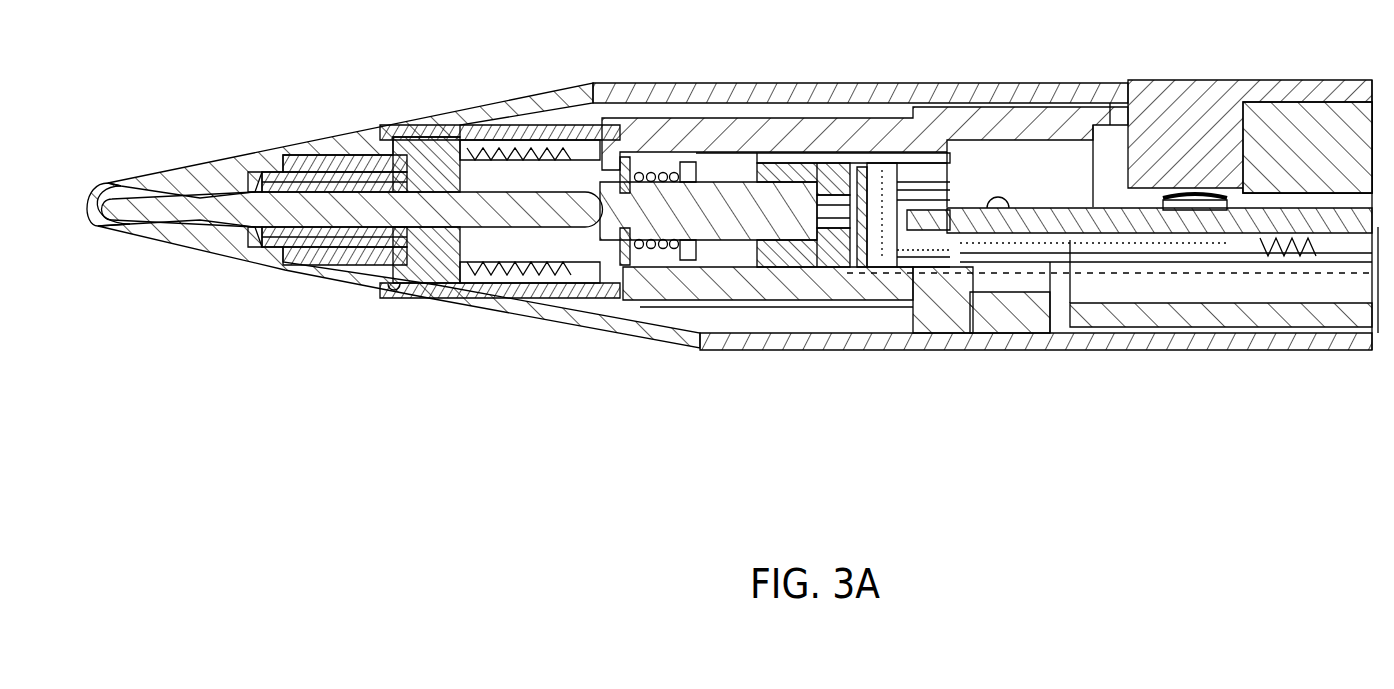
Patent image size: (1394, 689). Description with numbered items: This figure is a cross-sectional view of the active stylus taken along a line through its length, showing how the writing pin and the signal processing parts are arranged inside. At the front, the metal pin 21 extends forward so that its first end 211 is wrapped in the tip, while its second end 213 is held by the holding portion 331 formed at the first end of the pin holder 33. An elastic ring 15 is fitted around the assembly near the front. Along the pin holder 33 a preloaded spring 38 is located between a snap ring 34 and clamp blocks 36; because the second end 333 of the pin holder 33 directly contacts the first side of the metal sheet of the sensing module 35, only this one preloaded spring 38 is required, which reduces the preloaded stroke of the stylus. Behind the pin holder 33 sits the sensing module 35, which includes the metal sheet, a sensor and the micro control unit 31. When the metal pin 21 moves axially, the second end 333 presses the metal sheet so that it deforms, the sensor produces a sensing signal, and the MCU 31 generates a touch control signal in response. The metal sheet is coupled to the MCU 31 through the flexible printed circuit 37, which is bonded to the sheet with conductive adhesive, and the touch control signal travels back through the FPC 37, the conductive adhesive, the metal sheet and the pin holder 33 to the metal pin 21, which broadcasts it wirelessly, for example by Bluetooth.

The micro control unit (MCU) 31 is at (1290, 273).
The first end of the metal pin 211 is at (145, 230).
The metal pin 21 is at (353, 232).
The second end of the metal pin 213 is at (543, 230).
The elastic ring 15 is at (394, 388).
The holding portion 331 is at (543, 230).
The preloaded spring 38 is at (653, 170).
The snap ring 34 is at (627, 240).
The pin holder 33 is at (717, 180).
The clamp blocks 36 is at (688, 262).
The second end of the pin holder 333 is at (827, 220).
The sensing module 35 is at (966, 273).
The flexible printed circuit (FPC) 37 is at (1053, 257).